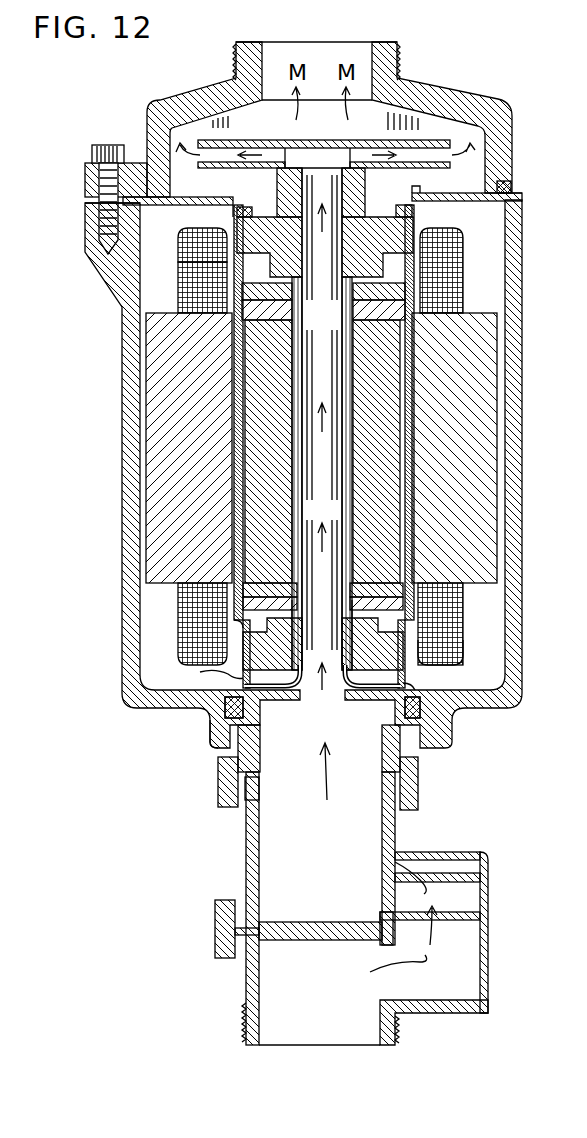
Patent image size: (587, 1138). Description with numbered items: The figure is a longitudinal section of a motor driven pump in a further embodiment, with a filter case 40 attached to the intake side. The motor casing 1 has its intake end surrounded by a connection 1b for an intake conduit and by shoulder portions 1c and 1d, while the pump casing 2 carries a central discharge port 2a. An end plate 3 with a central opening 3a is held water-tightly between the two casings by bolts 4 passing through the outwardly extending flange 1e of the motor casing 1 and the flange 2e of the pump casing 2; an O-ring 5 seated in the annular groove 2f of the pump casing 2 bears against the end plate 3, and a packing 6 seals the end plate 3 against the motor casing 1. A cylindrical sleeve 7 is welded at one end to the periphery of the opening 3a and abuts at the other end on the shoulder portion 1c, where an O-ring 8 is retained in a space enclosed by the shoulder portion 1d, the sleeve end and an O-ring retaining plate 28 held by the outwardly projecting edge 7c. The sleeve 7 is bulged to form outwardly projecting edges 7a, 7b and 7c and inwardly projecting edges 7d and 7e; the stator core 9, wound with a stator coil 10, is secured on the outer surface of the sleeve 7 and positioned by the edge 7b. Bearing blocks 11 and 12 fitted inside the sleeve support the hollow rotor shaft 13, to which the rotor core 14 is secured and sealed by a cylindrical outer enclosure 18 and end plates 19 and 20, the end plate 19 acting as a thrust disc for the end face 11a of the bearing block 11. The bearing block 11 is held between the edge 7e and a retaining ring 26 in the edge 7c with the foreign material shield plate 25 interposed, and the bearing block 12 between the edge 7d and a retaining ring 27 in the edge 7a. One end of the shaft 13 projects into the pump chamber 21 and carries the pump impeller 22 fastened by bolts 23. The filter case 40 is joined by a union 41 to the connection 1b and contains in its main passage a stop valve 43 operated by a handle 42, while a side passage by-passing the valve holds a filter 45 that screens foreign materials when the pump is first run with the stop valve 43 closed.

The motor casing 1 is at (122, 500).
The connection for an intake conduit 1b is at (406, 776).
The shoulder portion 1c is at (260, 728).
The shoulder portion 1d is at (236, 722).
The outwardly extending flange 1e is at (86, 236).
The pump casing 2 is at (414, 102).
The discharge port 2a is at (335, 44).
The outwardly extending flange 2e is at (86, 178).
The annular groove 2f is at (508, 184).
The end plate 3 is at (467, 215).
The opening 3a is at (412, 190).
The bolt 4 is at (90, 156).
The O-ring 5 is at (513, 191).
The packing 6 is at (142, 242).
The cylindrical sleeve 7 is at (414, 618).
The outwardly projecting edge 7a is at (234, 216).
The outwardly projecting edge 7b is at (232, 298).
The outwardly projecting edge 7c is at (200, 672).
The inwardly projecting edge 7d is at (232, 262).
The inwardly projecting edge 7e is at (226, 636).
The O-ring 8 is at (416, 724).
The stator core 9 is at (462, 584).
The stator coil 10 is at (462, 656).
The bearing block 11 is at (345, 636).
The end face 11a is at (345, 616).
The bearing block 12 is at (398, 214).
The hollow rotor shaft 13 is at (370, 408).
The rotor core 14 is at (352, 460).
The cylindrical outer enclosure 18 is at (246, 492).
The end plate 19 is at (274, 584).
The end plate 20 is at (298, 290).
The pump chamber 21 is at (186, 206).
The pump impeller 22 is at (296, 148).
The bolt 23 is at (278, 182).
The foreign material shield plate 25 is at (272, 700).
The retaining ring 26 is at (394, 698).
The retaining ring 27 is at (246, 214).
The O-ring retaining plate 28 is at (428, 690).
The filter case 40 is at (246, 972).
The union 41 is at (218, 790).
The handle 42 is at (215, 928).
The stop valve 43 is at (338, 922).
The filter 45 is at (429, 932).